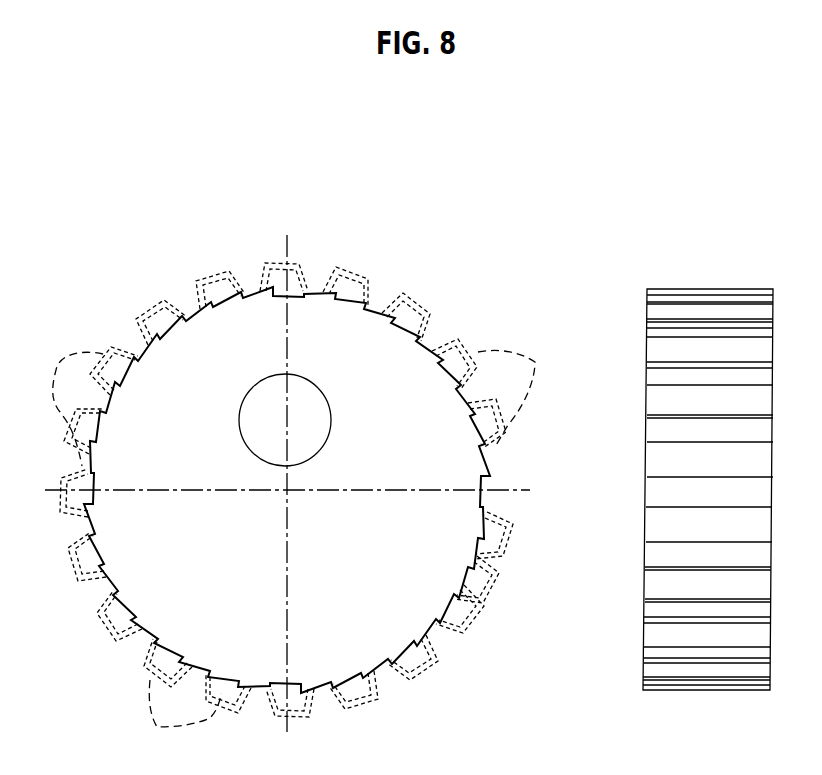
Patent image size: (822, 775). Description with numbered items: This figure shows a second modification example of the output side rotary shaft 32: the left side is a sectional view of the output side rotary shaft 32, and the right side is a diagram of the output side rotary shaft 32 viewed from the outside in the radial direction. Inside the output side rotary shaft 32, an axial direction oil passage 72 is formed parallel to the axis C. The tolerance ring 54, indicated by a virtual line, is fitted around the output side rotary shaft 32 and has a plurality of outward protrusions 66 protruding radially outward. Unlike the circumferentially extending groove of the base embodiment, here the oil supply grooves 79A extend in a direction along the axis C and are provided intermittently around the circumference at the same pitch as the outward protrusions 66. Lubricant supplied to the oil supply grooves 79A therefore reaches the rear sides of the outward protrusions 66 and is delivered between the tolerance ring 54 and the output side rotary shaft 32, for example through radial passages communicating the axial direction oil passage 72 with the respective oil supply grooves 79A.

The output side rotary shaft 32 is at (218, 342).
The tolerance ring 54 is at (425, 302).
The outward protrusions 66 is at (58, 358).
The axial direction oil passage 72 is at (320, 397).
The oil supply grooves 79A is at (348, 273).
The axis C is at (283, 498).